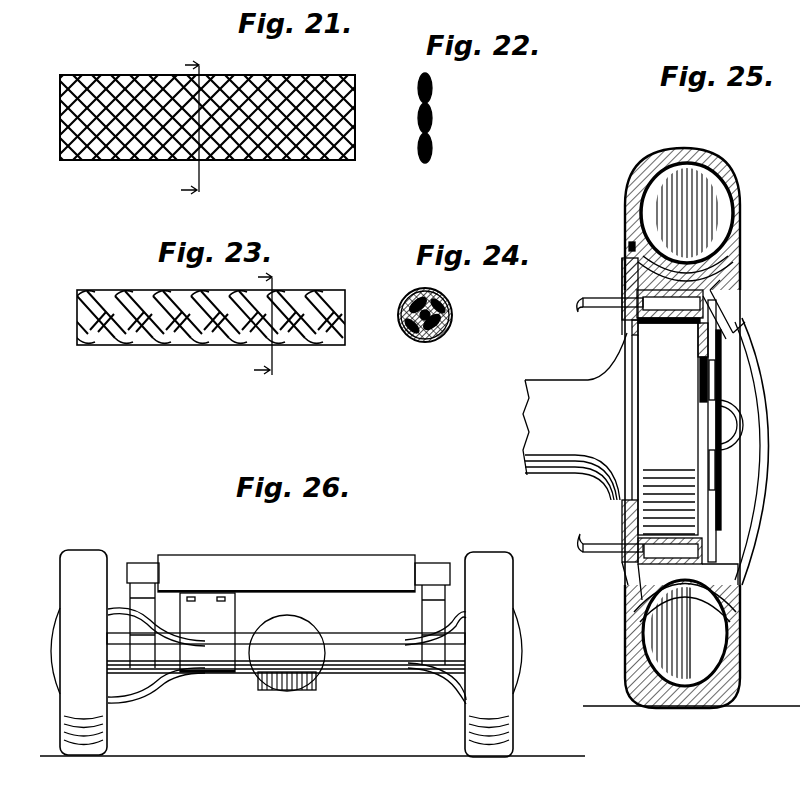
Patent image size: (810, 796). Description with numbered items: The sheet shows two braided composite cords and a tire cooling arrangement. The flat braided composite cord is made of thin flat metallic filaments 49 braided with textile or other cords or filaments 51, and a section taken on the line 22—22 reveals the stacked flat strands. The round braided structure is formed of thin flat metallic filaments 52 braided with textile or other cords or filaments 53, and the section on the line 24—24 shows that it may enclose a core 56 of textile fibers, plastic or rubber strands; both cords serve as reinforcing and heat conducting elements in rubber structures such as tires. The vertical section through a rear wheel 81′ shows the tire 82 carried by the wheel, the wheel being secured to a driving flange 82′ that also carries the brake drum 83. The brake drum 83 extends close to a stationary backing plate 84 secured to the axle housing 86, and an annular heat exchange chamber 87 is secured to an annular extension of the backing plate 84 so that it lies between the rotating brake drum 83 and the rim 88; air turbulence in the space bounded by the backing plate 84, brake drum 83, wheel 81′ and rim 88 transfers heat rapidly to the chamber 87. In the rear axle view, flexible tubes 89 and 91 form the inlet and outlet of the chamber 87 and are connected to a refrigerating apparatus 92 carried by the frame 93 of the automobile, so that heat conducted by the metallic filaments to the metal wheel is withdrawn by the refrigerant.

In FIG. 21, the section line 22— 22 is at (194, 128).
In FIG. 23, the section line 24— 24 is at (274, 331).
In FIG. 21, the thin flat metallic filaments 49 is at (185, 90).
In FIG. 22, the thin flat metallic filaments 49 is at (418, 88).
In FIG. 21, the textile or other cords or filaments 51 is at (208, 88).
In FIG. 22, the textile or other cords or filaments 51 is at (418, 118).
In FIG. 23, the thin flat metallic filaments 52 is at (162, 345).
In FIG. 24, the thin flat metallic filaments 52 is at (402, 304).
In FIG. 23, the textile or other cords or filaments 53 is at (126, 345).
In FIG. 24, the textile or other cords or filaments 53 is at (420, 292).
In FIG. 24, the core 56 is at (402, 304).
In FIG. 25, the rear wheel 81′ is at (742, 282).
In FIG. 26, the rear wheel 81′ is at (88, 540).
In FIG. 25, the tire 82 is at (744, 208).
In FIG. 25, the driving flange 82′ is at (708, 396).
In FIG. 25, the brake drum 83 is at (676, 436).
In FIG. 25, the stationary backing plate 84 is at (622, 512).
In FIG. 25, the axle housing 86 is at (562, 382).
In FIG. 26, the axle housing 86 is at (360, 674).
In FIG. 25, the annular heat exchange chamber 87 is at (705, 560).
In FIG. 25, the rim 88 is at (628, 246).
In FIG. 25, the flexible tube (inlet) 89 is at (594, 553).
In FIG. 26, the flexible tube (inlet) 89 is at (126, 692).
In FIG. 25, the flexible tube (outlet) 91 is at (588, 298).
In FIG. 26, the flexible tube (outlet) 91 is at (118, 605).
In FIG. 26, the refrigerating apparatus 92 is at (216, 676).
In FIG. 26, the frame 93 is at (265, 560).